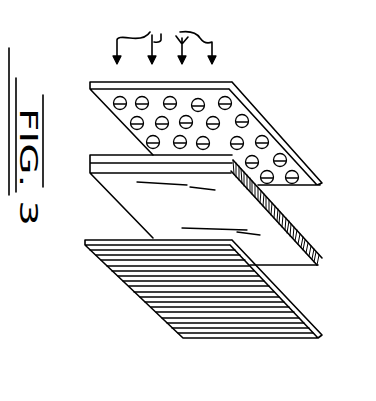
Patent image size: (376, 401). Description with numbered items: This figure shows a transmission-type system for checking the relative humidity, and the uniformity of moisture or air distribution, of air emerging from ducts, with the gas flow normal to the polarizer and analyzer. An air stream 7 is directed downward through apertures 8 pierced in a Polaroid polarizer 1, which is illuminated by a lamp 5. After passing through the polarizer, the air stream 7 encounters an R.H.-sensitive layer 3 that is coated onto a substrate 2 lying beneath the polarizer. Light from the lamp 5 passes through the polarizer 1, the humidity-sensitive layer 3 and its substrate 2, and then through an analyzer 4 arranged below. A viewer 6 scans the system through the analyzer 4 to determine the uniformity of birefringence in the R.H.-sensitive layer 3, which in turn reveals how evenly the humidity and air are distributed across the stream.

The Polaroid polarizer 1 is at (320, 185).
The substrate 2 is at (318, 265).
The R.H.-sensitive layer 3 is at (318, 249).
The analyzer 4 is at (317, 340).
The lamp 5 is at (201, 380).
The viewer 6 is at (273, 84).
The air stream 7 is at (164, 43).
The apertures 8 is at (147, 146).